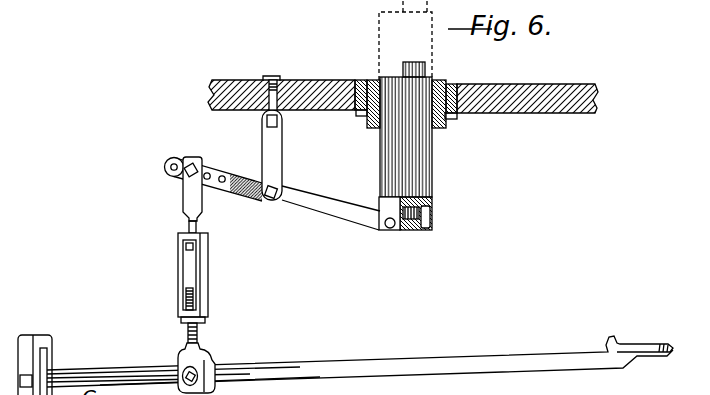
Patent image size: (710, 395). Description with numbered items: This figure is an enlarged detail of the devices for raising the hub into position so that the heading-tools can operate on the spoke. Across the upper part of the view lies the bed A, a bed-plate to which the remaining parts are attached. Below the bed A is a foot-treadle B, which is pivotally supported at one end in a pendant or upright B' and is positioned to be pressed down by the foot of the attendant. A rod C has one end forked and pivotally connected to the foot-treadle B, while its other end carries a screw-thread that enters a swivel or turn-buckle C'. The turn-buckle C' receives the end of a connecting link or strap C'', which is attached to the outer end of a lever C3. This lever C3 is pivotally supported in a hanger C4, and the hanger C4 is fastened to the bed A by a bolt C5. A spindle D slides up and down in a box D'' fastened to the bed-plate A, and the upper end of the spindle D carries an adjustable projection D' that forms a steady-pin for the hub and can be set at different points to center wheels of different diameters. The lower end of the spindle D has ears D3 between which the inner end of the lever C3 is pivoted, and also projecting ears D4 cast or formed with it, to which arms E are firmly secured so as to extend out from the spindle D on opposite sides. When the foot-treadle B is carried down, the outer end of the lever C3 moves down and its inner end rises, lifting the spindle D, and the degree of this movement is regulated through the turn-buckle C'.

The bed A is at (403, 85).
The foot-treadle B is at (360, 359).
The pendant or upright B' is at (51, 360).
The rod C is at (205, 356).
The swivel or turn-buckle C' is at (205, 288).
The connecting link or strap C'' is at (204, 195).
The lever C3 is at (307, 207).
The hanger C4 is at (283, 156).
The bolt C5 is at (276, 81).
The spindle D is at (386, 137).
The adjustable projection D' is at (405, 40).
The box D'' is at (412, 115).
The ears D3 is at (388, 230).
The projecting ears D4 is at (412, 233).
The arms E is at (408, 232).